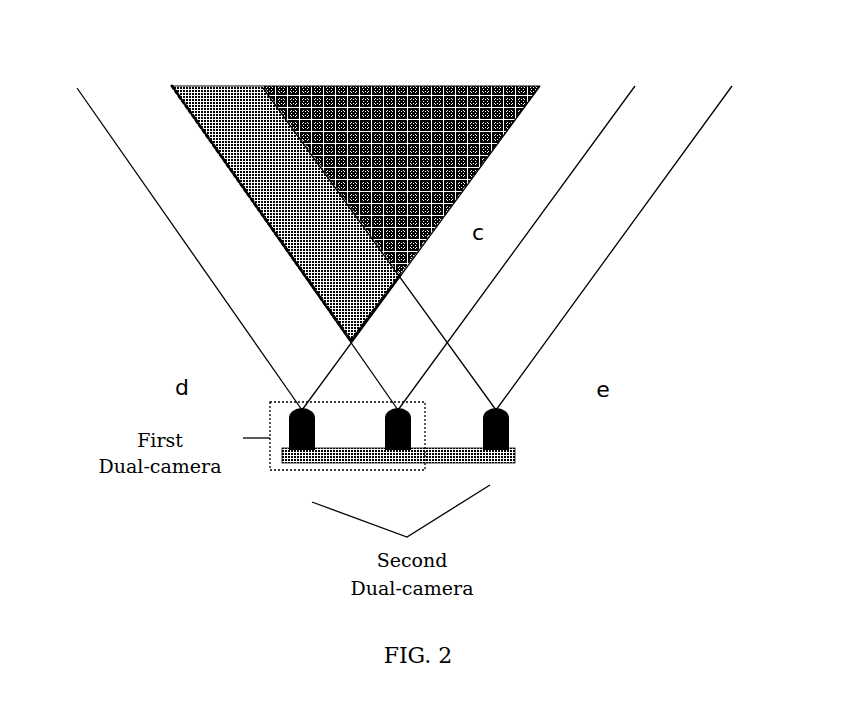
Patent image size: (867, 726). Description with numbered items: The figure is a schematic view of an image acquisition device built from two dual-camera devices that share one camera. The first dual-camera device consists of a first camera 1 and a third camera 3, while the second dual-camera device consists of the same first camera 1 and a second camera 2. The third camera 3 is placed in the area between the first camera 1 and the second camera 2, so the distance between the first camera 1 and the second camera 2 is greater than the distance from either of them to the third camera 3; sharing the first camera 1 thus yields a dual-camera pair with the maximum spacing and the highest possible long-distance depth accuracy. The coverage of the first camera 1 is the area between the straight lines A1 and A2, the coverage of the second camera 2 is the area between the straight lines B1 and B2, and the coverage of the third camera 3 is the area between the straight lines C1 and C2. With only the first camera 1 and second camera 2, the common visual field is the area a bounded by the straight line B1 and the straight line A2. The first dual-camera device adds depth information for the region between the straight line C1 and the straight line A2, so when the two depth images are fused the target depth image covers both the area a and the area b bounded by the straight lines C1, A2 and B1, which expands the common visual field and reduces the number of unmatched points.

The first camera 1 is at (302, 460).
The second camera 2 is at (496, 457).
The third camera 3 is at (398, 457).
The straight line A1 is at (183, 231).
The straight line A2 is at (435, 231).
The straight line B1 is at (371, 231).
The straight line B2 is at (625, 231).
The straight line C1 is at (271, 231).
The straight line C2 is at (531, 231).
The area a is at (401, 180).
The area b is at (356, 213).